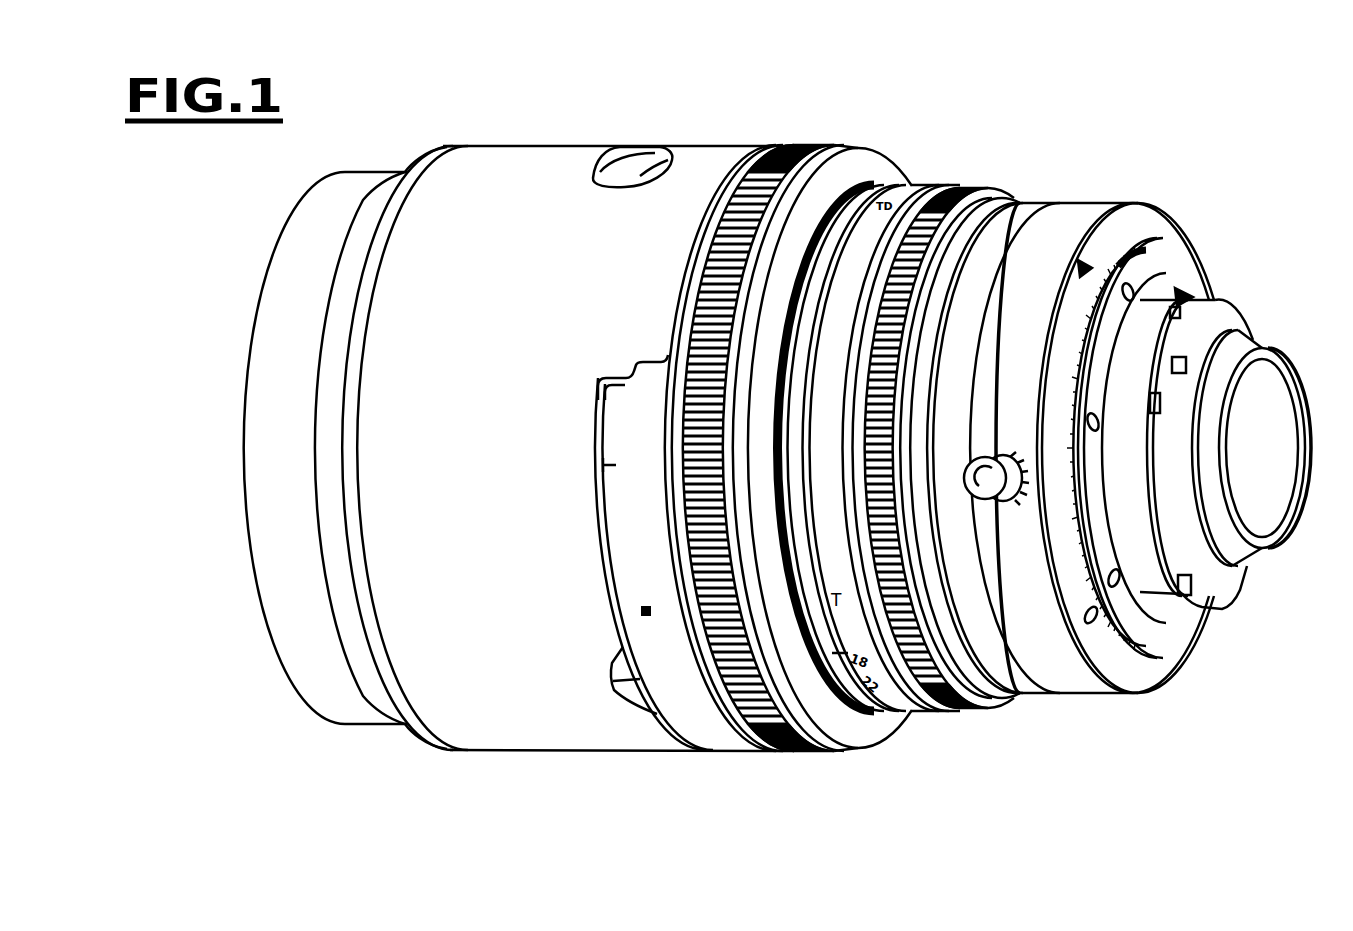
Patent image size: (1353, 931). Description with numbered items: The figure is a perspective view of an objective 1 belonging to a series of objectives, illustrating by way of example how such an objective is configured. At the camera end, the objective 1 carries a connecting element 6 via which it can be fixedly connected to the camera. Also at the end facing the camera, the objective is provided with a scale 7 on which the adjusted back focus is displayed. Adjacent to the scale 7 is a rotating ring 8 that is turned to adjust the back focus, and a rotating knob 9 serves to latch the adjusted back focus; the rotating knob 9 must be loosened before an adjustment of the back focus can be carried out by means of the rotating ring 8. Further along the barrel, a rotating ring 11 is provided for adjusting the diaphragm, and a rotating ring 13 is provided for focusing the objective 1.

The objective 1 is at (604, 771).
The connecting element 6 is at (1187, 292).
The scale 7 is at (1084, 262).
The rotating ring 8 is at (1053, 238).
The rotating knob 9 is at (967, 455).
The rotating ring 11 is at (904, 700).
The rotating ring 13 is at (738, 700).